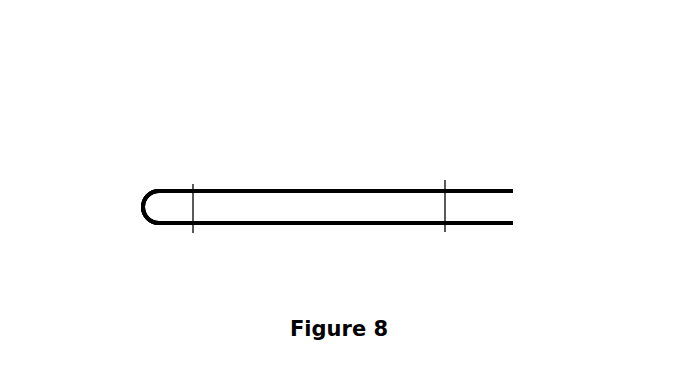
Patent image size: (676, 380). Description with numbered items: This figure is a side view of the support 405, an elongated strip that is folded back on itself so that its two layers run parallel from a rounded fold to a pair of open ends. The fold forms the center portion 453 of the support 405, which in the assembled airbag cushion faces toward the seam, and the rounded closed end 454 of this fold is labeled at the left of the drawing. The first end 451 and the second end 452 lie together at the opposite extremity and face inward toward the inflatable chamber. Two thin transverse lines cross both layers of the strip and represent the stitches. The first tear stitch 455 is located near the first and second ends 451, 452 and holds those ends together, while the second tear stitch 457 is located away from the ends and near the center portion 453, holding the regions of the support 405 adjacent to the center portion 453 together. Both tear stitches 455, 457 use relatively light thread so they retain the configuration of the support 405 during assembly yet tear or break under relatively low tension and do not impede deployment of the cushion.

The support 405 is at (257, 100).
The first end 451 is at (493, 189).
The second end 452 is at (493, 226).
The center portion 453 is at (165, 164).
The closed end 454 is at (139, 213).
The first tear stitch 455 is at (443, 210).
The second tear stitch 457 is at (195, 212).